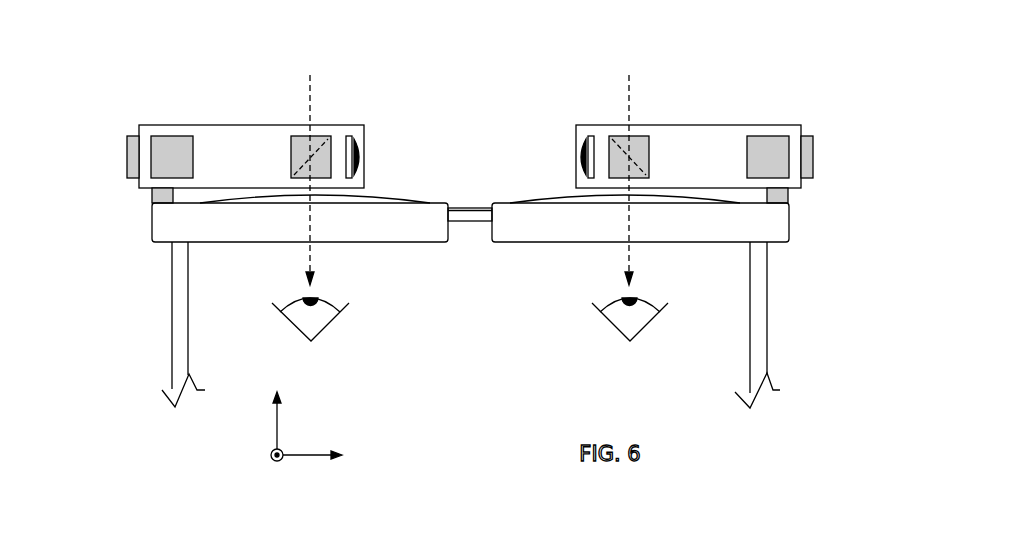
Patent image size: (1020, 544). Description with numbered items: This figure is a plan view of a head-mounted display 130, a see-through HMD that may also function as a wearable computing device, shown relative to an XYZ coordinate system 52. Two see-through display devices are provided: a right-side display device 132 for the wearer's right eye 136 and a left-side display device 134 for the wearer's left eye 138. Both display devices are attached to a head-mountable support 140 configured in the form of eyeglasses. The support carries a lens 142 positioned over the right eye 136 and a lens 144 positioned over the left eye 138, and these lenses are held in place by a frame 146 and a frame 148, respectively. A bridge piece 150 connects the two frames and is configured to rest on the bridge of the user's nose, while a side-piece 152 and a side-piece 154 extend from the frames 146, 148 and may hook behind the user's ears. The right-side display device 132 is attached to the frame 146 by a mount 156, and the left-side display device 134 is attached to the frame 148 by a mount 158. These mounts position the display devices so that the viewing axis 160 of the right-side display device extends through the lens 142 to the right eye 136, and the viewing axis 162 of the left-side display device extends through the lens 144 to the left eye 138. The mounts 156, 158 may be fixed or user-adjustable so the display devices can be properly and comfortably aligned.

The head-mounted display 130 is at (460, 242).
The right-side display device 132 is at (675, 125).
The left-side display device 134 is at (169, 123).
The right eye 136 is at (608, 321).
The left eye 138 is at (325, 330).
The head-mountable support 140 is at (470, 225).
The lens 142 is at (527, 197).
The lens 144 is at (392, 195).
The frame 146 is at (708, 242).
The frame 148 is at (227, 242).
The bridge piece 150 is at (472, 223).
The side-piece 152 is at (768, 328).
The side-piece 154 is at (172, 303).
The mount 156 is at (790, 195).
The mount 158 is at (152, 192).
The viewing axis 160 is at (628, 102).
The viewing axis 162 is at (310, 102).
The XYZ coordinate system 52 is at (307, 457).